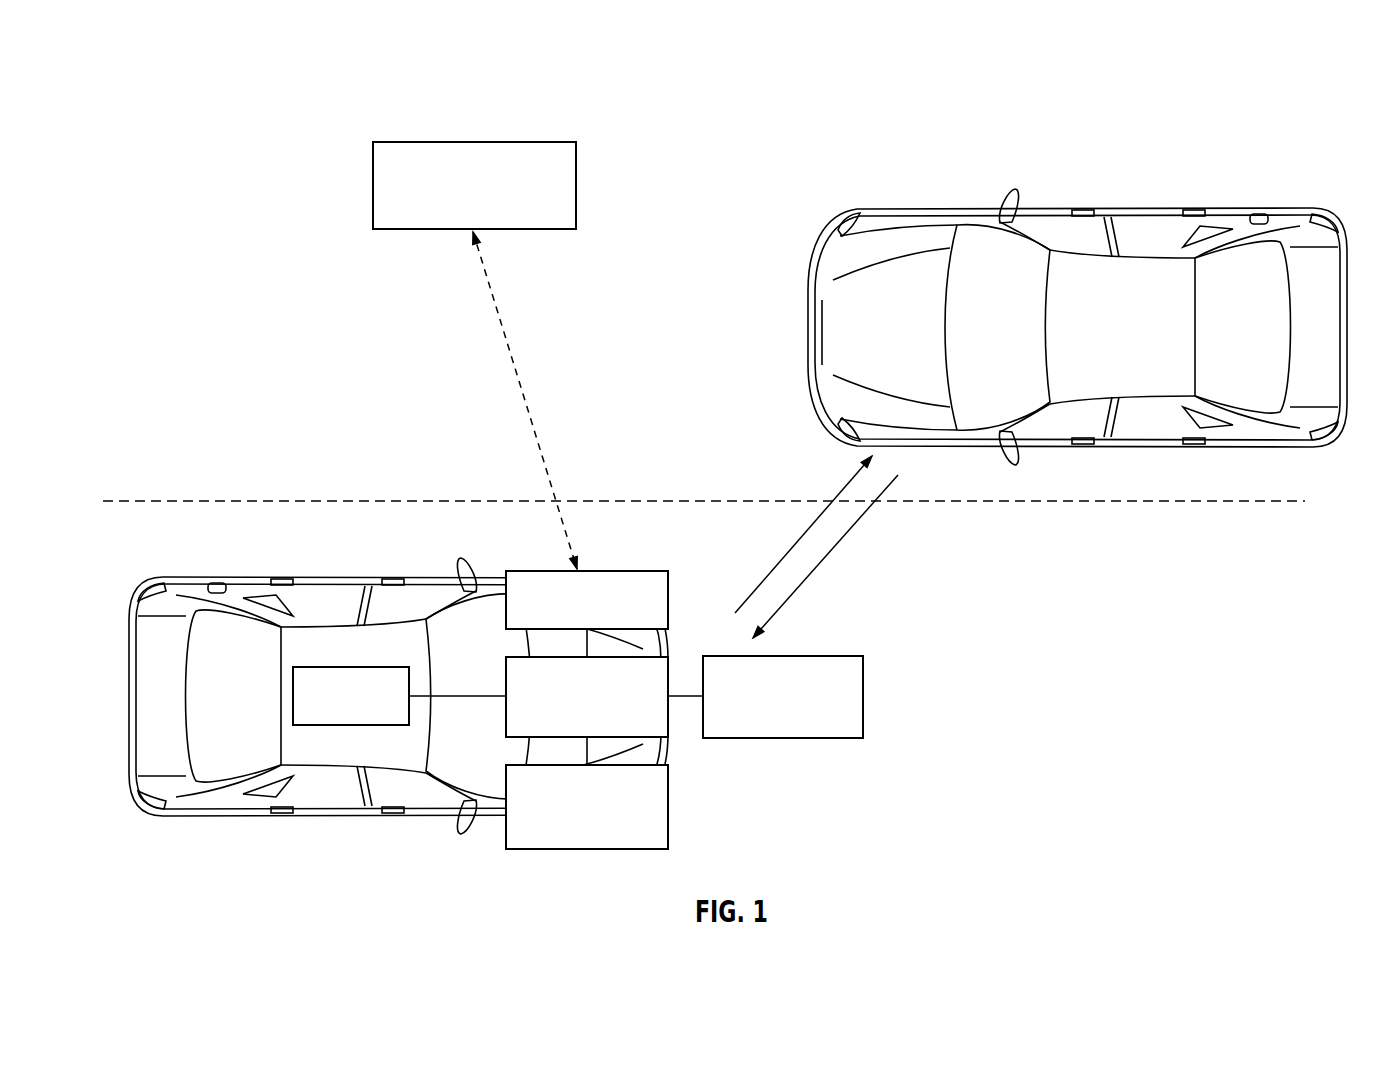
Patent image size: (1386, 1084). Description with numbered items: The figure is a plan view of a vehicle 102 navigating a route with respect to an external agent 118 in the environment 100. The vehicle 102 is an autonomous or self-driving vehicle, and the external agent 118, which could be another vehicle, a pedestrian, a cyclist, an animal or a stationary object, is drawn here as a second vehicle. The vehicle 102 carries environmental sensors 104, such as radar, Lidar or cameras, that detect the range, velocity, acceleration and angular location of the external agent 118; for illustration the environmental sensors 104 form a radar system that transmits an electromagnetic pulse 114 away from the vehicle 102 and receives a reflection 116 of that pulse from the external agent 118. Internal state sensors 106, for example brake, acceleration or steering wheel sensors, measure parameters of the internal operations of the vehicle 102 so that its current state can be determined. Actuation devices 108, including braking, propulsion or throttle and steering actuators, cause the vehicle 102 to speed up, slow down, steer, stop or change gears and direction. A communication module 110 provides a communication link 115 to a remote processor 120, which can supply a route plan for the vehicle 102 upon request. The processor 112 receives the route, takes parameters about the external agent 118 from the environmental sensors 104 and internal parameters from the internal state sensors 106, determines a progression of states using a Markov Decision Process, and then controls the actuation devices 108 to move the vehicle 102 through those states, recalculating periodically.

The environment 100 is at (157, 127).
The vehicle 102 is at (208, 580).
The environmental sensors 104 is at (864, 697).
The internal state sensors 106 is at (553, 849).
The actuation devices 108 is at (352, 667).
The communication module 110 is at (556, 571).
The processor 112 is at (668, 727).
The electromagnetic pulse 114 is at (788, 549).
The communication link 115 is at (512, 395).
The reflection 116 is at (812, 577).
The external agent 118 is at (1233, 207).
The remote processor 120 is at (444, 142).